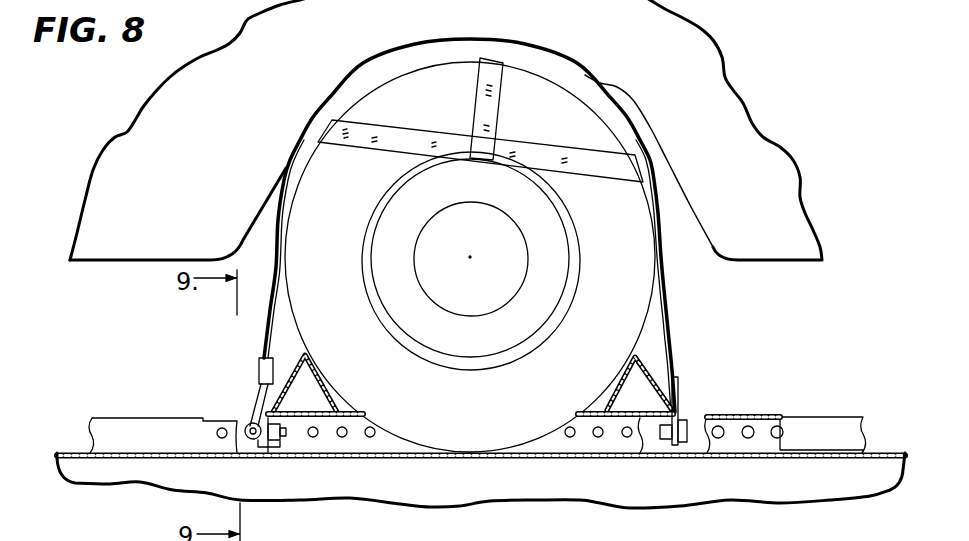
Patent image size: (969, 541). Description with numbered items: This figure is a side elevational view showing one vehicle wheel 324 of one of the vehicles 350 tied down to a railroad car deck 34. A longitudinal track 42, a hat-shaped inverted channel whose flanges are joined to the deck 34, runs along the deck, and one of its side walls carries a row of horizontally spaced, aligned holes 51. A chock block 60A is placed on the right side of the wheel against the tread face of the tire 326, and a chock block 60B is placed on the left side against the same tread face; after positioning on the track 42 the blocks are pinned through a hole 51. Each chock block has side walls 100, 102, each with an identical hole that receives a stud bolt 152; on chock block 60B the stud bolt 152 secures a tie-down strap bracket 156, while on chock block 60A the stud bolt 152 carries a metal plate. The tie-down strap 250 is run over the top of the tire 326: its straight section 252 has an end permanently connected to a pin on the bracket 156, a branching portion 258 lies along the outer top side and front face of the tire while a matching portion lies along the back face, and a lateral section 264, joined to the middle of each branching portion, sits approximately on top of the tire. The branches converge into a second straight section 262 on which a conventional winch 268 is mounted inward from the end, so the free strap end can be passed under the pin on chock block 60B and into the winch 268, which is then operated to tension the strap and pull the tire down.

The deck 34 is at (122, 460).
The track 42 is at (825, 412).
The holes 51 is at (749, 440).
The chock block 60A is at (652, 368).
The chock block 60B is at (287, 390).
The side wall 100 is at (668, 442).
The side wall 102 is at (275, 446).
The stud bolt 152 is at (686, 424).
The tie-down strap bracket 156 is at (253, 448).
The tie-down strap 250 is at (677, 268).
The straight section 252 is at (278, 227).
The branching portion 258 is at (382, 132).
The straight section 262 is at (662, 233).
The lateral section 264 is at (488, 105).
The winch 268 is at (258, 362).
The vehicle wheel 324 is at (280, 188).
The tire 326 is at (332, 256).
The vehicles 350 is at (768, 116).